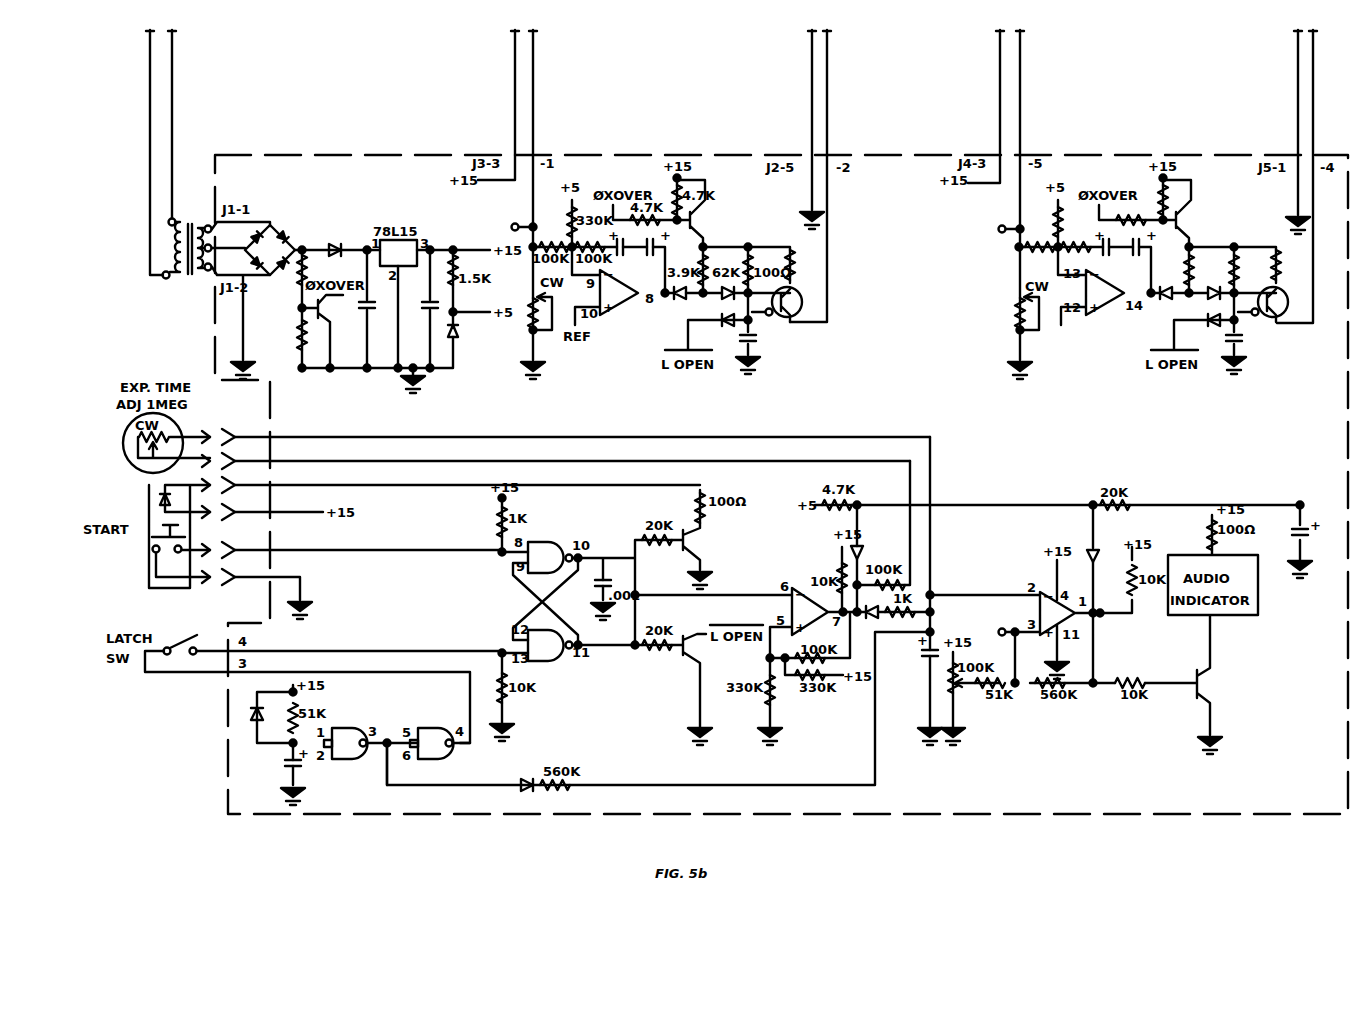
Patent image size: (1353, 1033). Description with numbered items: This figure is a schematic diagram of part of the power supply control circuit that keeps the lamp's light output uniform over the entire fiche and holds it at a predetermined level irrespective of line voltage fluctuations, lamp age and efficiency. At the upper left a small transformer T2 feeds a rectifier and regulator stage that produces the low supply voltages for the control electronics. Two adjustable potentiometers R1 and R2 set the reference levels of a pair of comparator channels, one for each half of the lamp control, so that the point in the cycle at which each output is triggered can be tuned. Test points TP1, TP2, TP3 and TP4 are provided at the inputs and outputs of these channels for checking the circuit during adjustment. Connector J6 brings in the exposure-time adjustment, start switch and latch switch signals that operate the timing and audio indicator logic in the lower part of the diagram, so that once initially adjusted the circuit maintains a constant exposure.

The transformer T2 is at (187, 258).
The potentiometer R1 is at (522, 306).
The potentiometer R2 is at (1013, 309).
The test point TP1 is at (506, 227).
The test point TP2 is at (994, 229).
The test point TP3 is at (767, 320).
The test point TP4 is at (1253, 320).
The connector J6 is at (576, 510).